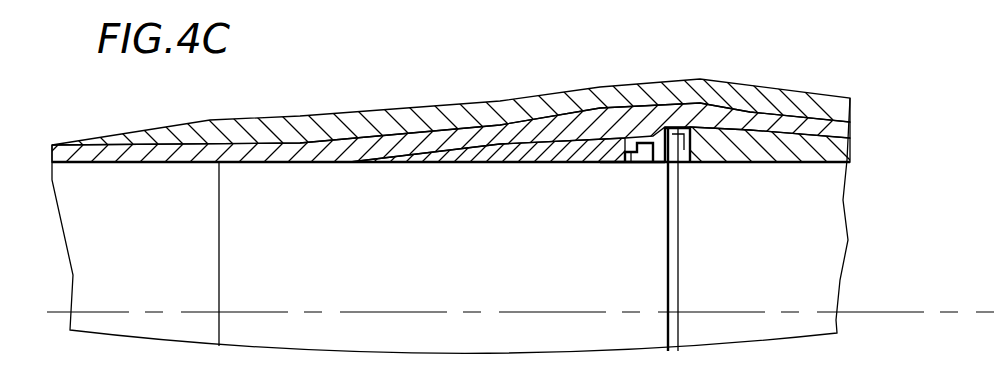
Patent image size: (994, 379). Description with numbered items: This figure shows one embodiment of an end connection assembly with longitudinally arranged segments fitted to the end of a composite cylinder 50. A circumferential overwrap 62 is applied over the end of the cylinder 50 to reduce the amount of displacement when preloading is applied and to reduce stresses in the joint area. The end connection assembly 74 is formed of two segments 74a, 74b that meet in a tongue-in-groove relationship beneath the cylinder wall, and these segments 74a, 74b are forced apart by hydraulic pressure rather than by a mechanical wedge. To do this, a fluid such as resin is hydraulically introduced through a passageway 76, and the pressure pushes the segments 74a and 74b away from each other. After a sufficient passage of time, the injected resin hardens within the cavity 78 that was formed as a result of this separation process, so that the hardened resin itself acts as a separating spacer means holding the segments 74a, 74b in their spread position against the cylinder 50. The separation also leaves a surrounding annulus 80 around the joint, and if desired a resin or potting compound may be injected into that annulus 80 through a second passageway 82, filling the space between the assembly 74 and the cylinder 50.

The composite cylinder 50 is at (72, 143).
The circumferential overwrap 62 is at (312, 125).
The end connection assembly 74 is at (617, 98).
The segment 74a is at (557, 143).
The segment 74b is at (760, 138).
The passageway 76 is at (637, 170).
The cavity 78 is at (650, 125).
The surrounding annulus 80 is at (679, 133).
The passageway 82 is at (688, 170).